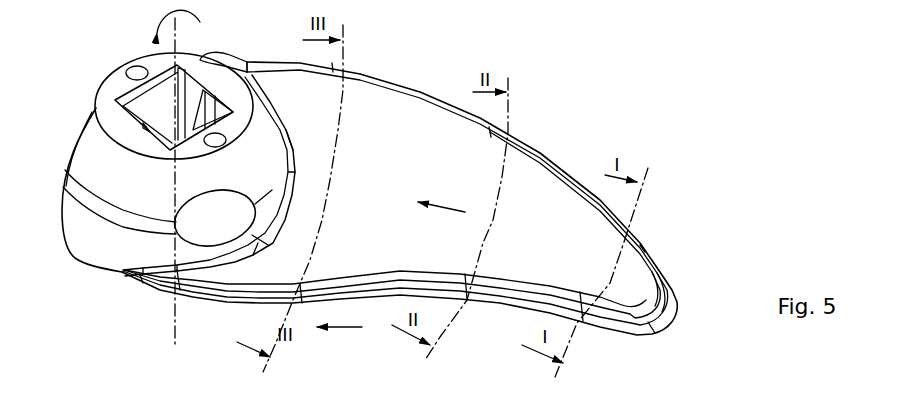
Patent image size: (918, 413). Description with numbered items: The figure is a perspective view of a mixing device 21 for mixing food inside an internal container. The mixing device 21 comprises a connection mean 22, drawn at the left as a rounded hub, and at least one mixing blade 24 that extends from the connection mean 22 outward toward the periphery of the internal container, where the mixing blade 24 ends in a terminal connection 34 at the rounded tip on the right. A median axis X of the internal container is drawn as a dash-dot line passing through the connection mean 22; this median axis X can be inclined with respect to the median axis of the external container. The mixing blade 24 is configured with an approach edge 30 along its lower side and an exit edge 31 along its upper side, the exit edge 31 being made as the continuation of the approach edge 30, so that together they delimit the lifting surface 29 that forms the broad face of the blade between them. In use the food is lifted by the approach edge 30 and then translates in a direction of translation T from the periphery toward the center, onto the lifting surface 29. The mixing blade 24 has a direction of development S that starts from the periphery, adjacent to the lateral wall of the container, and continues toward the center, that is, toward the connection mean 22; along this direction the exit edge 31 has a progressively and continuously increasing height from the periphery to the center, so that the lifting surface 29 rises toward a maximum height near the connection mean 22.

The mixing device 21 is at (527, 95).
The connection mean 22 is at (107, 75).
The mixing blade 24 is at (570, 172).
The lifting surface 29 is at (412, 143).
The approach edge 30 is at (503, 300).
The exit edge 31 is at (382, 87).
The terminal connection 34 is at (675, 322).
The median axis X is at (175, 327).
The direction of development S is at (447, 207).
The direction of translation T is at (345, 327).